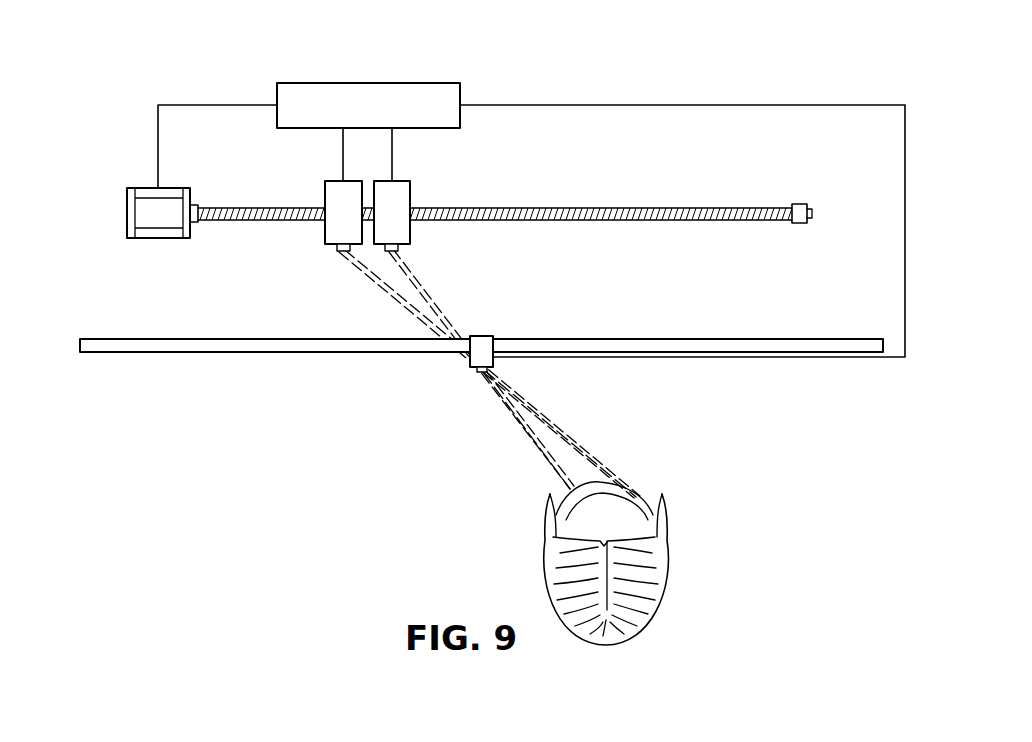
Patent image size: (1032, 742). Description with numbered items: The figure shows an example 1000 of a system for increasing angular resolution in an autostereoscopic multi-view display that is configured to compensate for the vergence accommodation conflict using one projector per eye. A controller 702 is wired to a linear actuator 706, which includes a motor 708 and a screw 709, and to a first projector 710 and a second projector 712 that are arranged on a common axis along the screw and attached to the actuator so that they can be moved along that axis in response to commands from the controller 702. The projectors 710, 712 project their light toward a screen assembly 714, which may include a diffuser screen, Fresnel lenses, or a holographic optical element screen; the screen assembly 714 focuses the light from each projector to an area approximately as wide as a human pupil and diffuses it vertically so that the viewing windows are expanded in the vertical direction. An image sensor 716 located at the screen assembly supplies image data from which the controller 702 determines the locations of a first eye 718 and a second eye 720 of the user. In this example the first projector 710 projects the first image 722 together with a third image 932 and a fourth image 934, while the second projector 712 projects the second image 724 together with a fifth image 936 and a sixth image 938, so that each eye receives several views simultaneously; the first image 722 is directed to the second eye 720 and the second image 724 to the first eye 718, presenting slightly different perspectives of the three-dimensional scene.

The example of the system 1000 is at (709, 70).
The controller 702 is at (368, 82).
The linear actuator 706 is at (124, 167).
The motor 708 is at (127, 200).
The screw 709 is at (801, 204).
The first projector 710 is at (325, 196).
The second projector 712 is at (410, 196).
The screen assembly 714 is at (162, 339).
The image sensor 716 is at (483, 336).
The first eye 718 is at (548, 497).
The second eye 720 is at (662, 497).
The first image 722 is at (540, 456).
The second image 724 is at (552, 432).
The third image 932 is at (345, 258).
The fourth image 934 is at (396, 297).
The fifth image 936 is at (406, 268).
The sixth image 938 is at (416, 285).